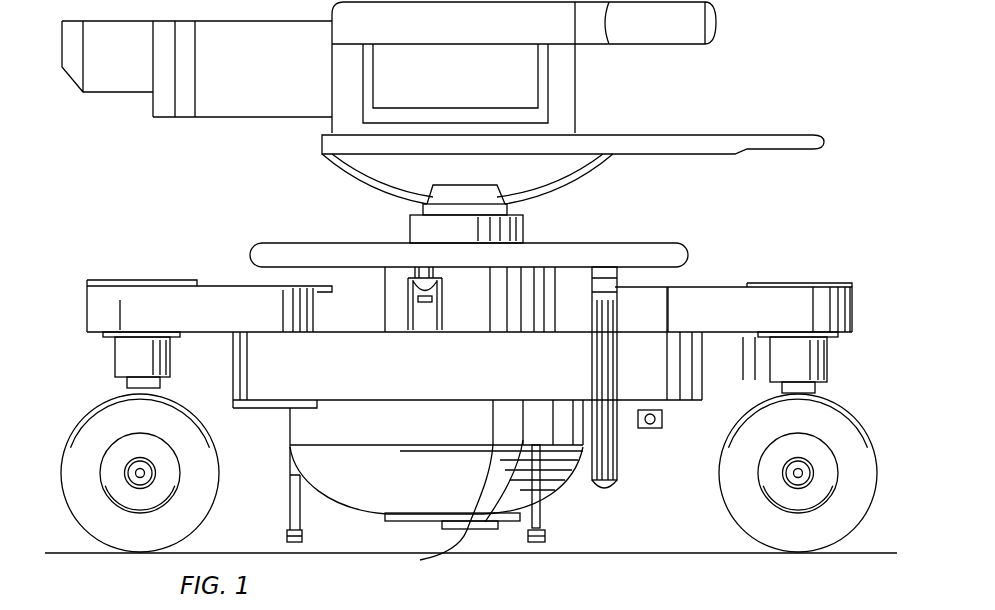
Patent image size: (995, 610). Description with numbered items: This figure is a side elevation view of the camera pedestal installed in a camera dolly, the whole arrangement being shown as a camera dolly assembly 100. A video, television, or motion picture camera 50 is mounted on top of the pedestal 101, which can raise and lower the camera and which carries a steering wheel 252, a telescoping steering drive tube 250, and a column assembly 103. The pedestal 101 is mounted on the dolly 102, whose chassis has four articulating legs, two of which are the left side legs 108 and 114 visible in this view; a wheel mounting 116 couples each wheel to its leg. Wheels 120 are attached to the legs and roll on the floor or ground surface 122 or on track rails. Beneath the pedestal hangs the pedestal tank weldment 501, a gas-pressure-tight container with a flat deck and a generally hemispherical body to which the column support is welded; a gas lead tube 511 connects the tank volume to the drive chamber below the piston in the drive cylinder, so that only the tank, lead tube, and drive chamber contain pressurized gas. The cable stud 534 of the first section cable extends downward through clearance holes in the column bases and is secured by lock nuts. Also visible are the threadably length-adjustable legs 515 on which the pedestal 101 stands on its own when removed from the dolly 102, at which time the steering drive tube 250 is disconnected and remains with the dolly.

The camera 50 is at (568, 98).
The mobile cart 100 is at (743, 245).
The pedestal 101 is at (368, 222).
The dolly 102 is at (845, 272).
The column assembly 103 is at (395, 284).
The left side leg 108 is at (103, 290).
The left side leg 114 is at (797, 275).
The wheel mount 116 is at (840, 347).
The wheels 120 is at (103, 414).
The floor or ground surface 122 is at (250, 527).
The telescoping steering drive tube 250 is at (617, 463).
The steering wheel 252 is at (663, 247).
The pedestal tank weldment 501 is at (365, 502).
The gas lead tube 511 is at (497, 478).
The legs 515 is at (291, 493).
The cable stud 534 is at (449, 513).